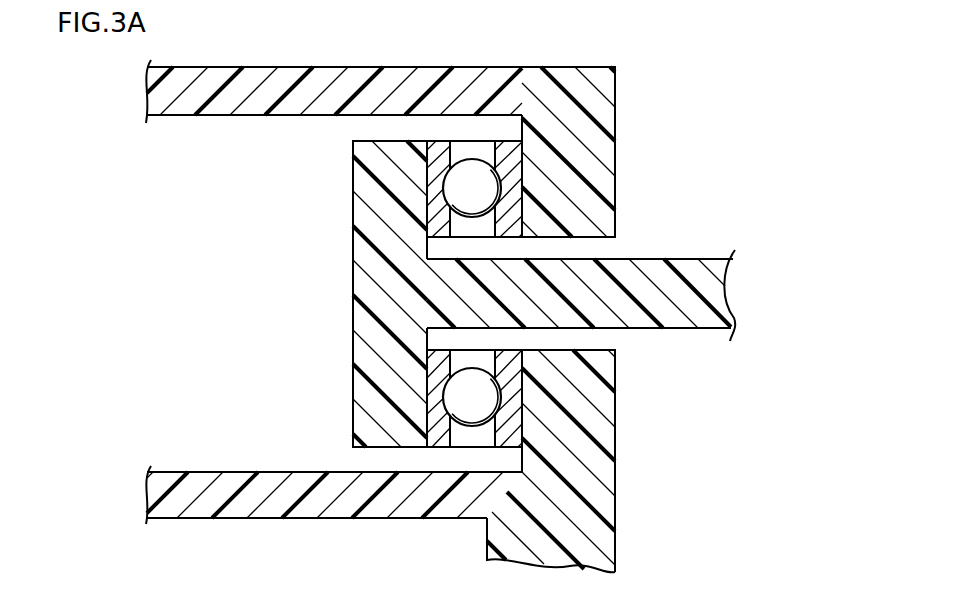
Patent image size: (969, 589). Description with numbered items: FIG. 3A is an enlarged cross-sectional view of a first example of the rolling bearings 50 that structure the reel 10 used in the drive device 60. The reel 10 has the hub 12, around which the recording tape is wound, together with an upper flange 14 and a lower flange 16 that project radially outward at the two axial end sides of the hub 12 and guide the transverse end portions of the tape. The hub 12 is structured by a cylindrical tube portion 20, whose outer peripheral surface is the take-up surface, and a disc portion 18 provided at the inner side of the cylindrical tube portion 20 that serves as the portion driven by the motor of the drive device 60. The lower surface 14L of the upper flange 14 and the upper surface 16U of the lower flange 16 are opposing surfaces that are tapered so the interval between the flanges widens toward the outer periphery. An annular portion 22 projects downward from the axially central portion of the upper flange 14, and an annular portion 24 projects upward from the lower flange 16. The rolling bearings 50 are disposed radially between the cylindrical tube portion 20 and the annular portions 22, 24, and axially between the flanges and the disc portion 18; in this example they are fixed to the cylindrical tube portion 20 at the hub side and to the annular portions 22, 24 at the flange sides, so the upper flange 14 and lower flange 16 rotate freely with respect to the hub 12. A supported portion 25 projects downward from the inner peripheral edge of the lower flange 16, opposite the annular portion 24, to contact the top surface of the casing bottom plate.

The reel 10 is at (458, 295).
The drive device 60 is at (458, 295).
The hub 12 is at (536, 294).
The upper flange 14 is at (334, 93).
The lower surface of the upper flange 14L is at (215, 117).
The lower flange 16 is at (334, 498).
The upper surface of the lower flange 16U is at (169, 471).
The disc portion 18 is at (686, 265).
The cylindrical tube portion 20 is at (371, 289).
The annular portion 22 is at (603, 169).
The annular portion 24 is at (546, 461).
The supported portion 25 is at (603, 556).
The rolling bearing 50 is at (484, 137).